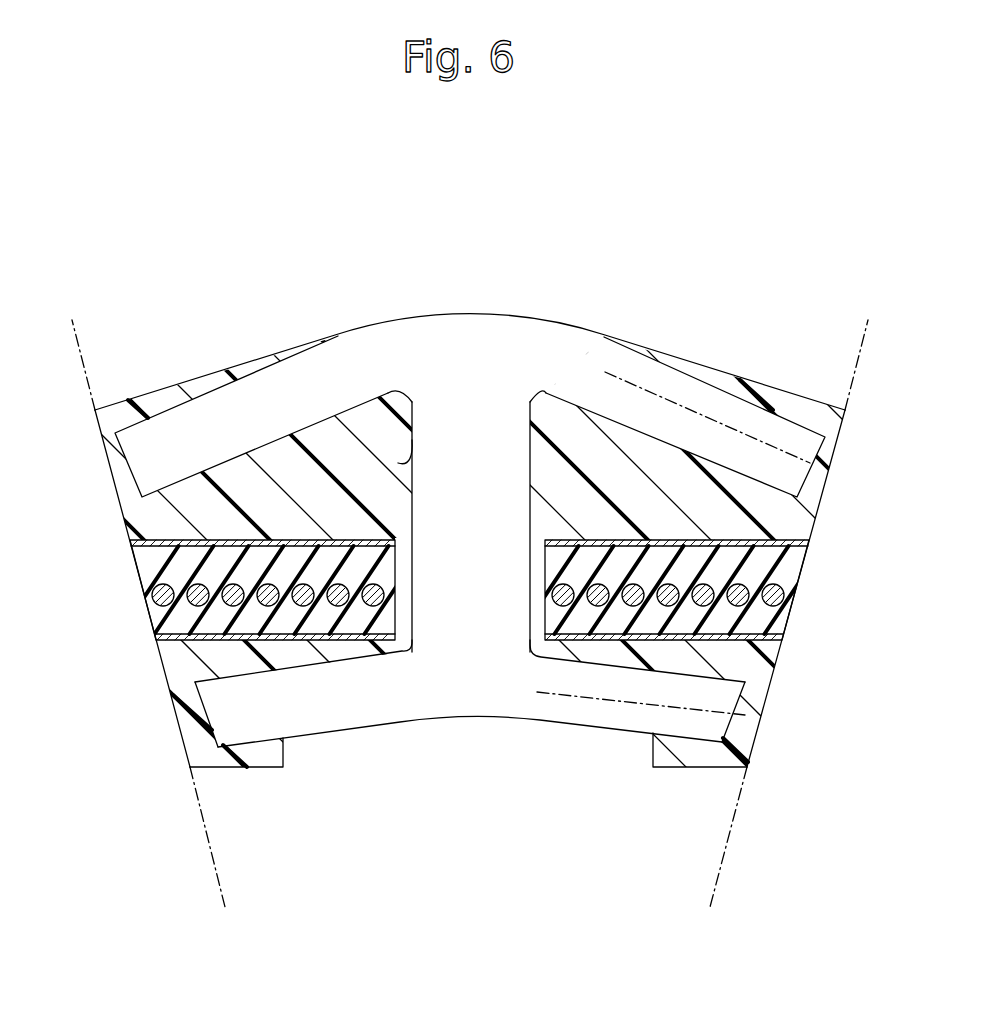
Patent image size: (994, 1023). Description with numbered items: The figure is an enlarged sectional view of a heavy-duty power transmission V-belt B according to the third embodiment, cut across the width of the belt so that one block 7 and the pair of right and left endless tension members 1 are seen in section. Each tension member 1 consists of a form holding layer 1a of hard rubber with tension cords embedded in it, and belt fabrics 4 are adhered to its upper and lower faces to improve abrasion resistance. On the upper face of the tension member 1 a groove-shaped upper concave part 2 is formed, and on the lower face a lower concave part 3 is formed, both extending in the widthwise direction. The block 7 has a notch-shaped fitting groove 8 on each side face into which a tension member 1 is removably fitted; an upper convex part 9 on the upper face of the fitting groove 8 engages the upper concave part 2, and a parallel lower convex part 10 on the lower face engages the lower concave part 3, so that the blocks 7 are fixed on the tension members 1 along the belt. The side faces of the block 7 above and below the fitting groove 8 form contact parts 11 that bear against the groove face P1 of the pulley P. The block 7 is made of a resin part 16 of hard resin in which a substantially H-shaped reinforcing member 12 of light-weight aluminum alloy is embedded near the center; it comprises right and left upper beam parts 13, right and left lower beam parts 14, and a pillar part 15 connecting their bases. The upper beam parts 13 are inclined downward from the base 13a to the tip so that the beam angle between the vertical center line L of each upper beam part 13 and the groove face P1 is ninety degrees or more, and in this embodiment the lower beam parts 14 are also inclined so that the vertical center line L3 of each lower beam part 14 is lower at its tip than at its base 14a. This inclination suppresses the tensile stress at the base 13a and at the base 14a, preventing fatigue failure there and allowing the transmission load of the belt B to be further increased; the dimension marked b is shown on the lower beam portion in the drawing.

The tension member 1 is at (148, 629).
The form holding layer 1a is at (147, 567).
The upper concave part 2 is at (412, 517).
The lower concave part 3 is at (320, 645).
The belt fabric 4 is at (396, 548).
The block 7 is at (248, 355).
The fitting groove 8 is at (385, 577).
The upper convex part 9 is at (303, 548).
The lower convex part 10 is at (250, 650).
The contact part 11 is at (112, 473).
The reinforcing member 12 is at (471, 304).
The upper beam part 13 is at (742, 396).
The base of the upper beam part 13a is at (404, 406).
The lower beam part 14 is at (455, 708).
The base of the lower beam part 14a is at (413, 722).
The pillar part 15 is at (398, 463).
The resin part 16 is at (583, 430).
The heavy-duty power transmission V-belt B is at (151, 383).
The pulley P is at (860, 353).
The groove face P1 is at (222, 888).
The vertical center line of the upper beam part L is at (687, 407).
The vertical center line of the lower beam part L3 is at (662, 715).
The coil width b is at (678, 728).